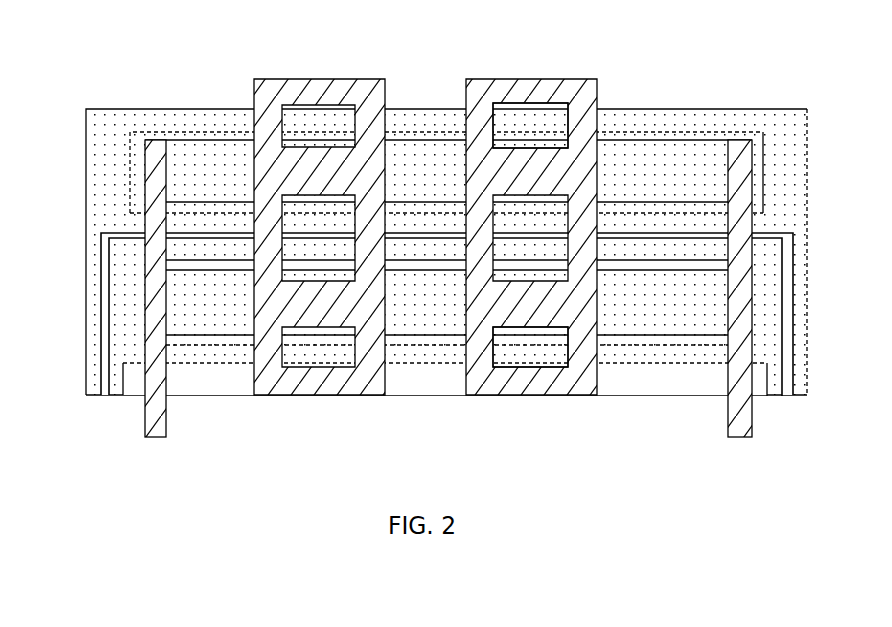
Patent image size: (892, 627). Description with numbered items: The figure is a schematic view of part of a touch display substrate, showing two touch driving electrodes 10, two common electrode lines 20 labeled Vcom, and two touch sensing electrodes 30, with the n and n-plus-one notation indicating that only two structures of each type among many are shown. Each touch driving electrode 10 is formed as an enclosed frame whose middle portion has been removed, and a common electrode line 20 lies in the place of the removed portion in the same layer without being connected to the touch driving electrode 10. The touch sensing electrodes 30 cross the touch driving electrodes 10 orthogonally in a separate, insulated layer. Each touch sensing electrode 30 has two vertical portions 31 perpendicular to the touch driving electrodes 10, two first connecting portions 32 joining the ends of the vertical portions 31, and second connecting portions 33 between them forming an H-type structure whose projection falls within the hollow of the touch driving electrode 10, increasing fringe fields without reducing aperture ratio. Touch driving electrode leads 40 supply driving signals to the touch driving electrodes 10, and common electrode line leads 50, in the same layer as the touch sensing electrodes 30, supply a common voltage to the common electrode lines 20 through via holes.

The touch driving electrode 10 is at (647, 122).
The common electrode line 20 is at (680, 162).
The touch sensing electrode 30 is at (460, 235).
The vertical portion 31 is at (477, 122).
The first connecting portion 32 is at (551, 93).
The second connecting portion 33 is at (548, 308).
The touch driving electrode lead 40 is at (93, 348).
The common electrode line lead 50 is at (157, 390).